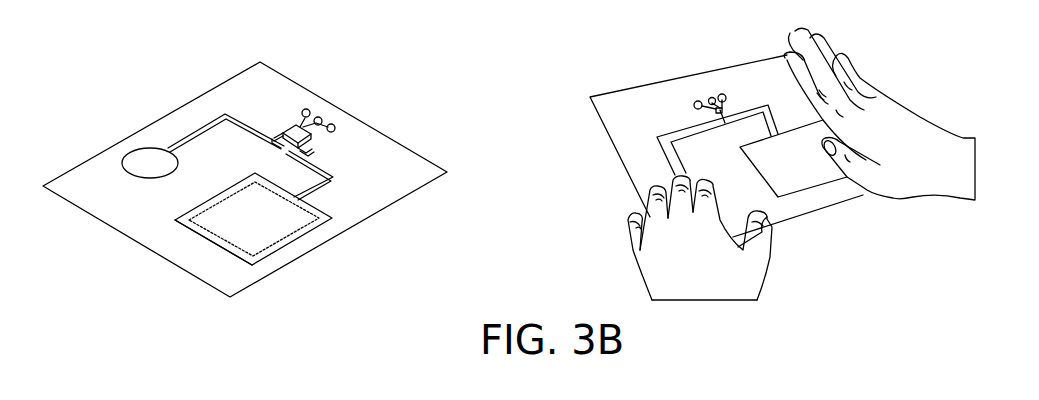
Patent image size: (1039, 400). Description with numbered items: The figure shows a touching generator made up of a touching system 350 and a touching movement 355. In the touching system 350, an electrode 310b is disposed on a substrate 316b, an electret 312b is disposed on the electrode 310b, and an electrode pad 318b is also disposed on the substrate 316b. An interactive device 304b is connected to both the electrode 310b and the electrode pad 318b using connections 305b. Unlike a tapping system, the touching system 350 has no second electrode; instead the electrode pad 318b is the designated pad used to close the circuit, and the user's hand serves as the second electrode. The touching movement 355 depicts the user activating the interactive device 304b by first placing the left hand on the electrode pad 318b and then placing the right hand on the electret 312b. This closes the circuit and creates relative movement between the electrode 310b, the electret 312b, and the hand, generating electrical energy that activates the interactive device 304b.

The touching system 350 is at (408, 58).
The touching movement 355 is at (899, 28).
The connections 305b is at (224, 111).
The interactive device 304b is at (325, 115).
The substrate 316b is at (404, 181).
The electrode 310b is at (273, 225).
The electrode pad 318b is at (147, 166).
The electret 312b is at (206, 244).